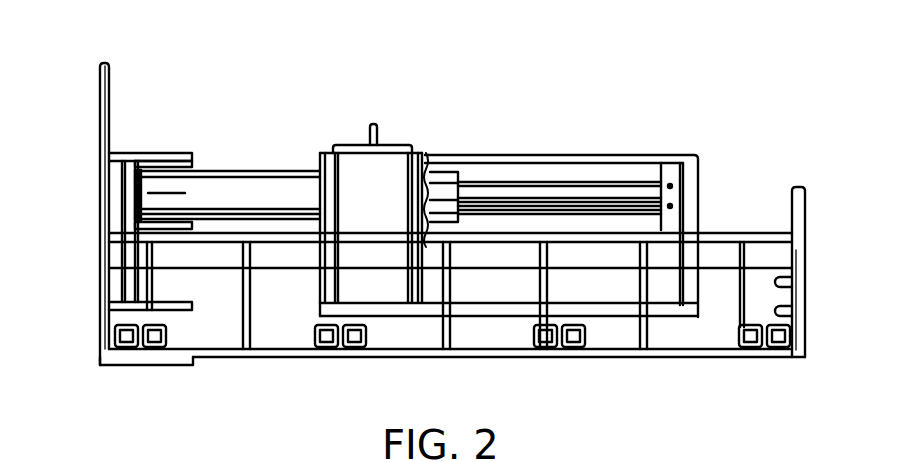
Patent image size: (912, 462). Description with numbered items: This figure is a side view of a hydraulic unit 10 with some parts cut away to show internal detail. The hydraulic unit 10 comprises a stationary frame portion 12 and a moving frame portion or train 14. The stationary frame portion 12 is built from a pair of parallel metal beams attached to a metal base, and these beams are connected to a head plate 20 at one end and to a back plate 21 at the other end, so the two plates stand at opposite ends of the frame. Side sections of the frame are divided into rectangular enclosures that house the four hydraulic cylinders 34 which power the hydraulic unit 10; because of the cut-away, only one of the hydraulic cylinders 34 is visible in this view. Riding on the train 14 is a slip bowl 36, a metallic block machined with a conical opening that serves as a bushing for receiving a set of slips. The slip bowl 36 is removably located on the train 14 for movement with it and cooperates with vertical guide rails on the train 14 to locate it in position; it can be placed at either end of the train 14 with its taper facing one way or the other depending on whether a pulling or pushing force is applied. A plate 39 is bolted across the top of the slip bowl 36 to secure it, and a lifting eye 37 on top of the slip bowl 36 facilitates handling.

The hydraulic unit 10 is at (244, 64).
The stationary frame portion 12 is at (413, 360).
The moving frame portion or train 14 is at (568, 155).
The head plate 20 is at (100, 83).
The back plate 21 is at (800, 210).
The hydraulic cylinder 34 is at (252, 185).
The slip bowl 36 is at (355, 165).
The lifting eye 37 is at (372, 125).
The plate 39 is at (392, 150).